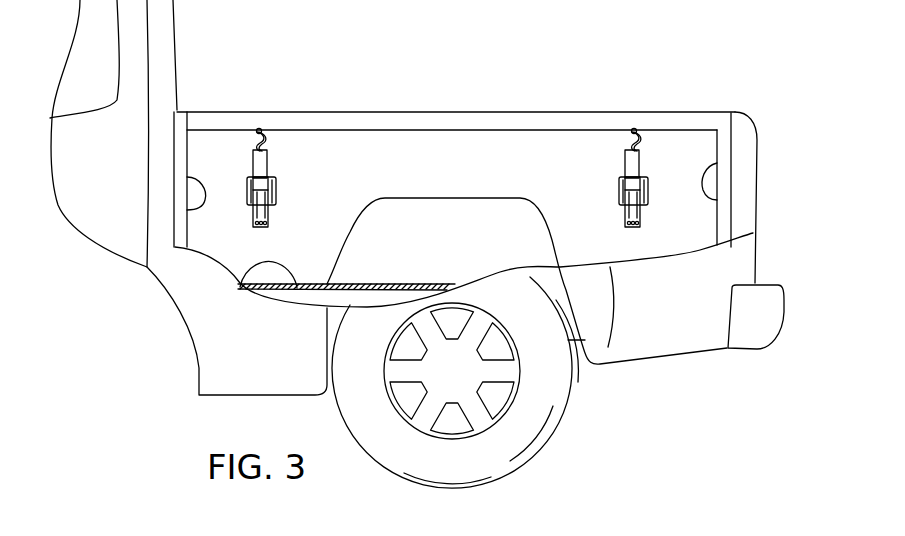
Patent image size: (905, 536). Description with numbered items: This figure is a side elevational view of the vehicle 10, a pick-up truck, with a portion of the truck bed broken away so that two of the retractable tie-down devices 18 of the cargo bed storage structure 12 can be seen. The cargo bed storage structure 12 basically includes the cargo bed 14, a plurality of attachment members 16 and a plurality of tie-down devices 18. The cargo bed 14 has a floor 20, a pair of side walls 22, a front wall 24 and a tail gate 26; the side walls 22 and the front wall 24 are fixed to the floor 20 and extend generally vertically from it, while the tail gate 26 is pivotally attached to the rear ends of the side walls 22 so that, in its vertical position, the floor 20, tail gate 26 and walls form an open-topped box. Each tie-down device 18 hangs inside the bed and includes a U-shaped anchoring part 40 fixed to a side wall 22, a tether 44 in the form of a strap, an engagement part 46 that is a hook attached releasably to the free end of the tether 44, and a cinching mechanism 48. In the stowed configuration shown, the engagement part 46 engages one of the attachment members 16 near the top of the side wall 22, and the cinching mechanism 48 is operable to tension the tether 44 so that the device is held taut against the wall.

The vehicle 10 is at (226, 40).
The cargo bed storage structure 12 is at (724, 28).
The cargo bed 14 is at (703, 105).
The attachment member 16 is at (255, 141).
The tie-down device 18 is at (446, 152).
The floor 20 is at (262, 268).
The side wall 22 is at (455, 110).
The front wall 24 is at (200, 207).
The tail gate 26 is at (713, 194).
The U-shaped anchoring part 40 is at (270, 223).
The tether 44 is at (268, 162).
The engagement part 46 is at (265, 141).
The cinching mechanism 48 is at (288, 204).